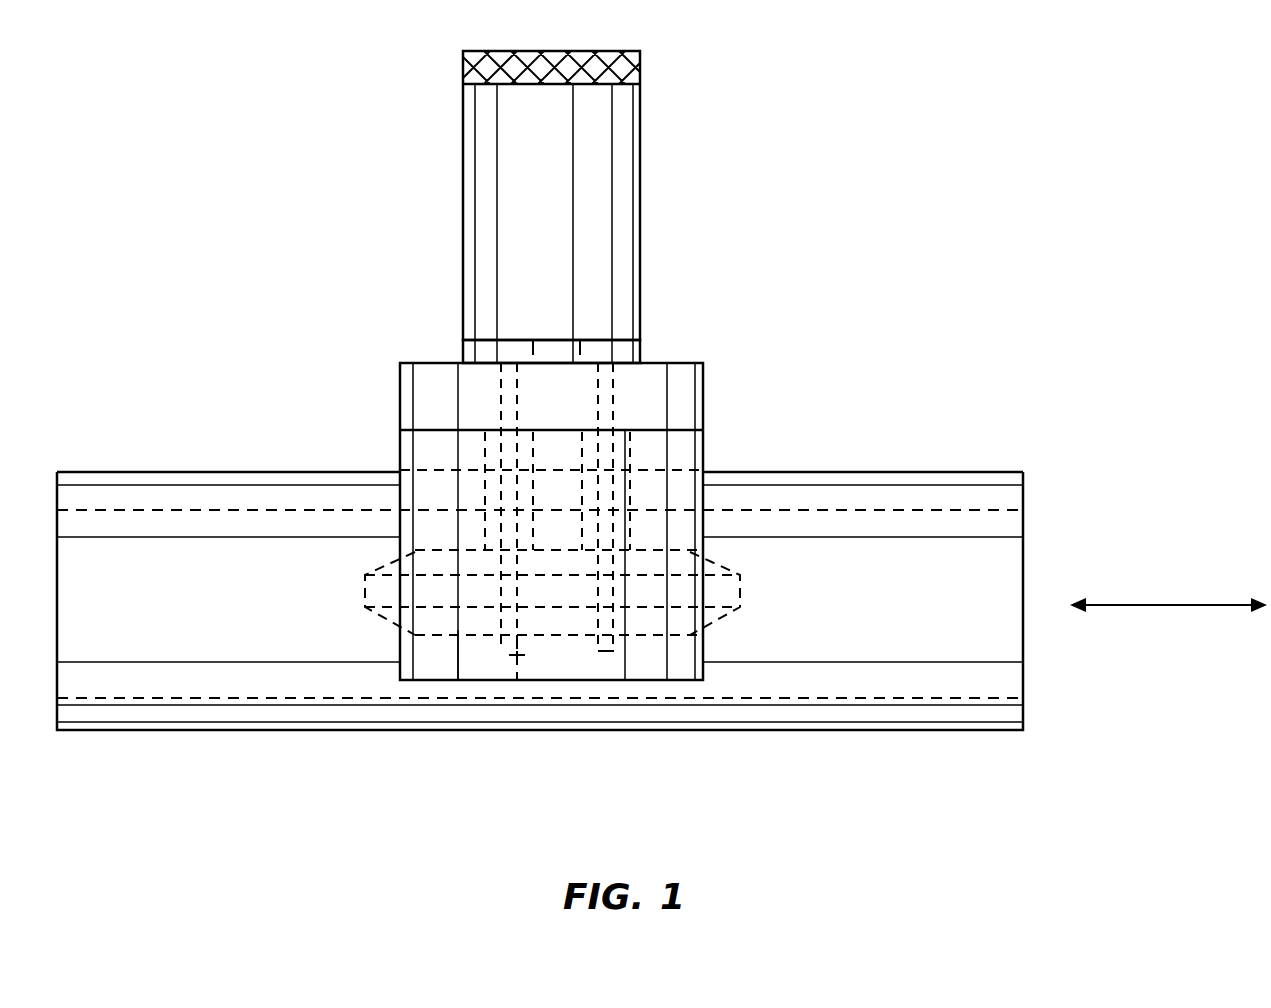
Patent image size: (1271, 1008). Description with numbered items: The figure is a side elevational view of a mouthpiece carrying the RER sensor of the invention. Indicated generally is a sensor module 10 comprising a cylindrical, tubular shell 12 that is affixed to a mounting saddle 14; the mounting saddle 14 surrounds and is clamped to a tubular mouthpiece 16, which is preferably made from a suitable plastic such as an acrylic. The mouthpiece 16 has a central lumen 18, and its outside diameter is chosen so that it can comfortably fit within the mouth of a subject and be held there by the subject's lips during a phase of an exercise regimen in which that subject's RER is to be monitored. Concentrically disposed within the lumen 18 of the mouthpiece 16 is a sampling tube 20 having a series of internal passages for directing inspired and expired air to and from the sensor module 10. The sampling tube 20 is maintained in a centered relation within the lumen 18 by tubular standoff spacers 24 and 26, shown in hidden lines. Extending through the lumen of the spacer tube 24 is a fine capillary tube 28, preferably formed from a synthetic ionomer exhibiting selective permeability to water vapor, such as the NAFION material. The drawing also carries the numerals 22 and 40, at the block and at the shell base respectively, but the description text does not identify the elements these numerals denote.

The sensor module 10 is at (708, 163).
The tubular shell 12 is at (480, 207).
The mounting saddle 14 is at (412, 363).
The tubular mouthpiece 16 is at (832, 472).
The central lumen 18 is at (970, 512).
The sampling tube 20 is at (725, 620).
The hidden member 22 is at (460, 640).
The tubular standoff spacer 24 is at (500, 462).
The tubular standoff spacer 26 is at (640, 458).
The capillary tube 28 is at (517, 655).
The piston rod 40 is at (450, 380).